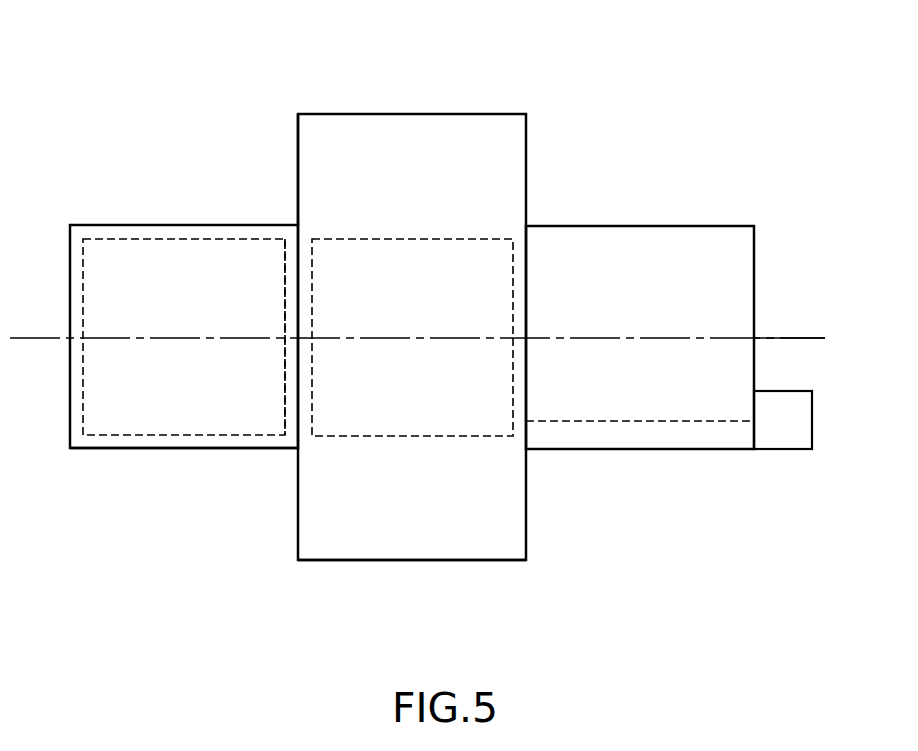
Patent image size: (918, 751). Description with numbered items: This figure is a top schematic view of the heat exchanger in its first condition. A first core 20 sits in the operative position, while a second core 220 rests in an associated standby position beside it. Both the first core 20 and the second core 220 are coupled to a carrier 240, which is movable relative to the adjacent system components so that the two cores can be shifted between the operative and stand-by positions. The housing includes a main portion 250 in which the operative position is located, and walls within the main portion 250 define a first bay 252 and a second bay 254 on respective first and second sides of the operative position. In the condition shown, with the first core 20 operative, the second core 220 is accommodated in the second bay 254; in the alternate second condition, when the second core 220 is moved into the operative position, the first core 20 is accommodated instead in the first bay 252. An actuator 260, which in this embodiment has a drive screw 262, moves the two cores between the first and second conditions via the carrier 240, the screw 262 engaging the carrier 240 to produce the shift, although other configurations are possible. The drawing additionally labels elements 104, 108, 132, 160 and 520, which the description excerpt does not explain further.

The first core 20 is at (482, 293).
The rotor 104 is at (418, 567).
The rotor body 108 is at (490, 108).
The rotor end face 132 is at (298, 127).
The magnet cavity 160 is at (485, 238).
The second core 220 is at (205, 270).
The carrier 240 is at (285, 265).
The main portion 250 is at (293, 475).
The first bay 252 is at (575, 452).
The second bay 254 is at (97, 448).
The actuator 260 is at (782, 463).
The drive screw 262 is at (667, 421).
The axis of rotation 520 is at (797, 338).